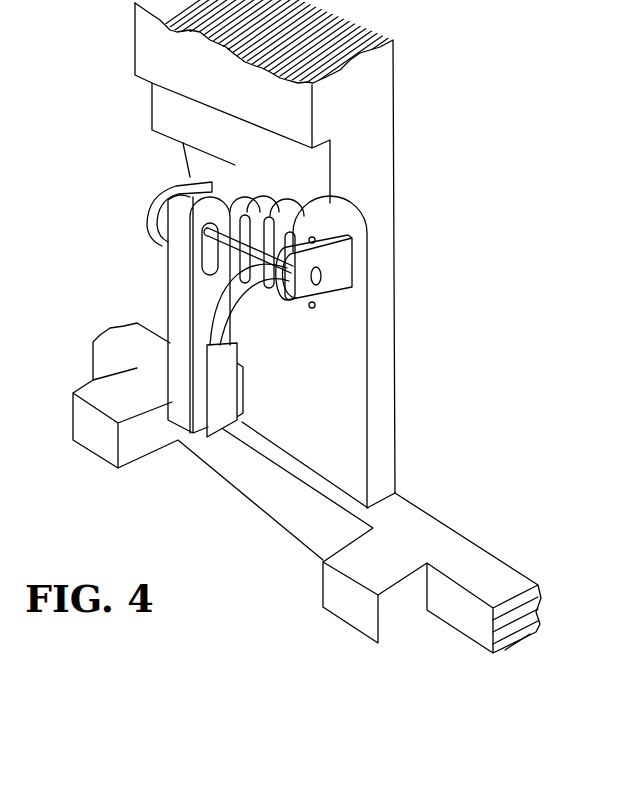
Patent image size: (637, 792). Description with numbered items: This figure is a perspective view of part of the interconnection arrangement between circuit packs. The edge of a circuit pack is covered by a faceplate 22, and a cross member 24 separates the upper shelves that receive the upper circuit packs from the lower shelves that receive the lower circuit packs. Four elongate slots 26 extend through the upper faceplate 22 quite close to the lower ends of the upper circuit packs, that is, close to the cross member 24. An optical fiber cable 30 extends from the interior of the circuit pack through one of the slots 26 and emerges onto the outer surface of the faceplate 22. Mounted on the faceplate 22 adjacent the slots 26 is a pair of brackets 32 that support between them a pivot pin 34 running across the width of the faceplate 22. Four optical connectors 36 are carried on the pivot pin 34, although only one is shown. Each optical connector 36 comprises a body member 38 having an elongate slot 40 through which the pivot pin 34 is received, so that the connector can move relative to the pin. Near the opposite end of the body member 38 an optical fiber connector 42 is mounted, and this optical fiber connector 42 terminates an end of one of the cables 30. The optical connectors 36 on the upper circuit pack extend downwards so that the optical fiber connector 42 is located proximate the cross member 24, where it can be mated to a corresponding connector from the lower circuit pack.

The faceplate 22 is at (378, 338).
The cross member 24 is at (400, 535).
The elongate slots 26 is at (310, 207).
The optical fiber cable 30 is at (165, 262).
The brackets 32 is at (167, 190).
The pivot pin 34 is at (228, 182).
The optical connector 36 is at (222, 278).
The body member 38 is at (177, 312).
The elongate slot 40 is at (203, 248).
The optical fiber connector 42 is at (217, 413).